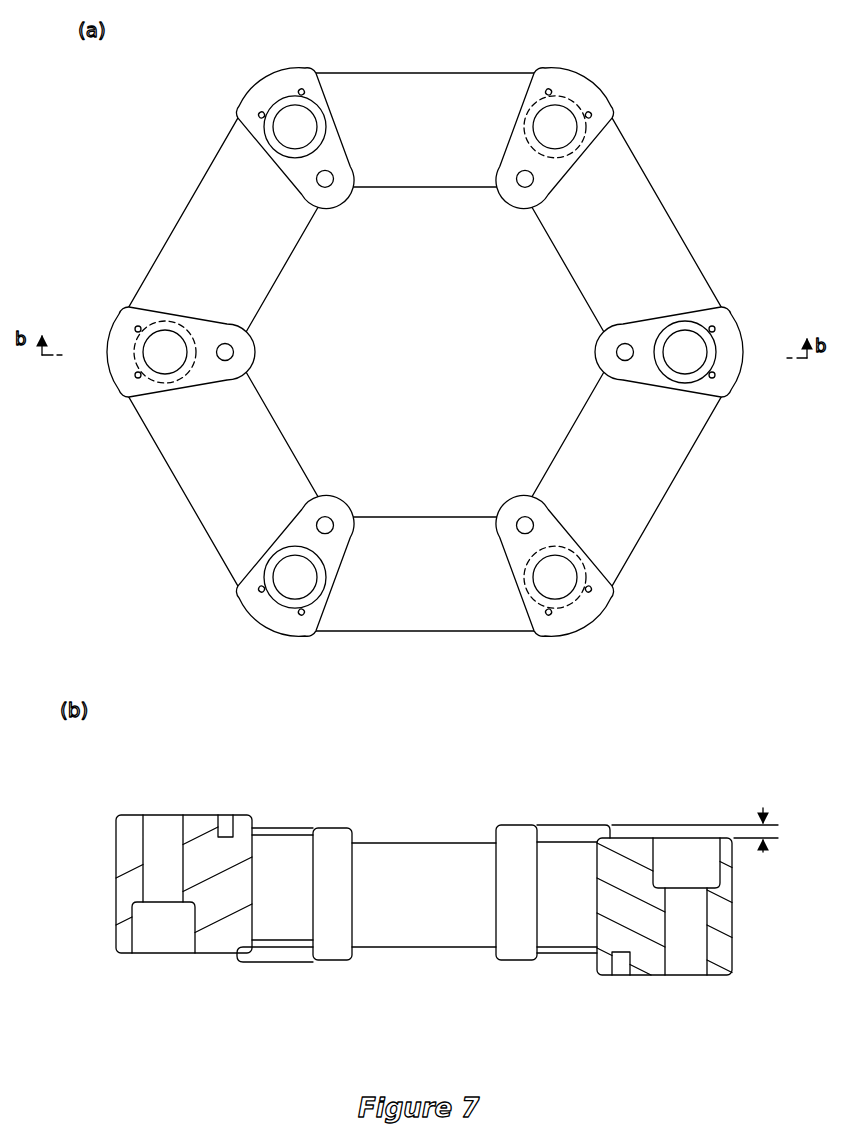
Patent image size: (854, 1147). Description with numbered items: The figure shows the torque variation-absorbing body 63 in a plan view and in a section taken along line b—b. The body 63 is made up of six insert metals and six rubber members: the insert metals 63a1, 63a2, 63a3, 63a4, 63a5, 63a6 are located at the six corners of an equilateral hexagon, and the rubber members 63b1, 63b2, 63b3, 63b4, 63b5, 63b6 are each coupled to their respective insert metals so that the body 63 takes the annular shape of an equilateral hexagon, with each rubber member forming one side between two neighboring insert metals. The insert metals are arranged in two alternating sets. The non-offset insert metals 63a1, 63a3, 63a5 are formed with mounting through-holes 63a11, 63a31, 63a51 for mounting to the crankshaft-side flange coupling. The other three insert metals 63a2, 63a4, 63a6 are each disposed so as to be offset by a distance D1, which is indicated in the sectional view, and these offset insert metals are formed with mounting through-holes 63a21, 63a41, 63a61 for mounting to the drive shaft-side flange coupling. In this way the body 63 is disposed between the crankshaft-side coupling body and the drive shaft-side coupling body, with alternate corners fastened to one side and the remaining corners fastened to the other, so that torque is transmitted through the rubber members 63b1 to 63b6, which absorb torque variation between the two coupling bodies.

The torque variation-absorbing body 63 is at (716, 565).
The insert metal 63a1 is at (698, 652).
The mounting through-hole 63a11 is at (697, 372).
The insert metal 63a2 is at (588, 503).
The mounting through-hole 63a21 is at (566, 106).
The insert metal 63a3 is at (269, 491).
The mounting through-hole 63a31 is at (300, 107).
The insert metal 63a4 is at (149, 648).
The mounting through-hole 63a41 is at (163, 363).
The insert metal 63a5 is at (287, 579).
The mounting through-hole 63a51 is at (290, 585).
The insert metal 63a6 is at (568, 588).
The mounting through-hole 63a61 is at (560, 590).
The rubber member 63b1 is at (582, 242).
The rubber member 63b2 is at (428, 170).
The rubber member 63b3 is at (278, 253).
The rubber member 63b4 is at (262, 450).
The rubber member 63b5 is at (441, 532).
The rubber member 63b6 is at (585, 470).
The offset distance D1 is at (713, 851).